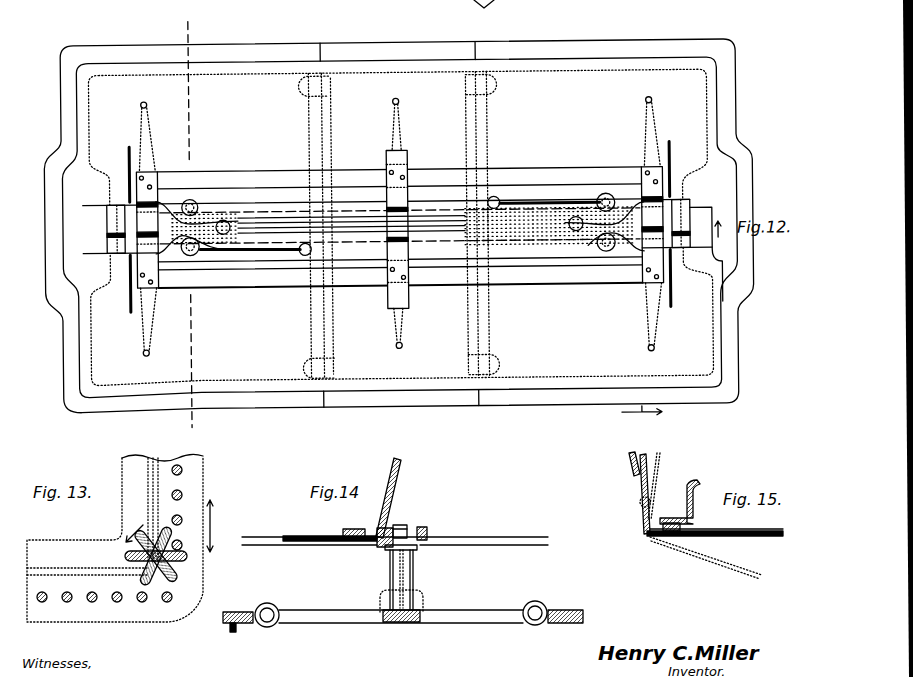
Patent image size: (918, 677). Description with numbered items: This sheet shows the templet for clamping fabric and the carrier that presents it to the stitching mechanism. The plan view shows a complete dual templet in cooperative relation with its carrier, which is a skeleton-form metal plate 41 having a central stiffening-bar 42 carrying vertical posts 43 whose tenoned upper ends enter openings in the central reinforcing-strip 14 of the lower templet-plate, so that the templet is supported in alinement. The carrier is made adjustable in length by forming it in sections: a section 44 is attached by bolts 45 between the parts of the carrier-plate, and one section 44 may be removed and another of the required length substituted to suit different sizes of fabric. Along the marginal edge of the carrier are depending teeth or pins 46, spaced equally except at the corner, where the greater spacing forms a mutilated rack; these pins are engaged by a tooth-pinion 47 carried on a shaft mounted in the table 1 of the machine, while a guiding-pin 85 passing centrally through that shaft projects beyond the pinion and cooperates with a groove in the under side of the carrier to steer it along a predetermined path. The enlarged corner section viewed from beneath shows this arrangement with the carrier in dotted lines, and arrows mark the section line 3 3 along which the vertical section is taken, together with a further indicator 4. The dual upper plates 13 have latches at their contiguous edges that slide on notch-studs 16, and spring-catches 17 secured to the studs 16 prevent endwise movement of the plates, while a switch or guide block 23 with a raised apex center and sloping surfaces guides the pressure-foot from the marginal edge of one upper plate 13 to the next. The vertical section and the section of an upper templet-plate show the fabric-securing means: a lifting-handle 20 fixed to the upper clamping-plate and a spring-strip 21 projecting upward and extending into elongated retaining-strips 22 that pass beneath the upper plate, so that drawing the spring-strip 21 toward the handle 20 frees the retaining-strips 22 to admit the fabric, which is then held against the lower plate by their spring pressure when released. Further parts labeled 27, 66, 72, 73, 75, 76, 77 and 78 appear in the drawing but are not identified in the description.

In FIG. 12, the table 1 is at (675, 325).
In FIG. 12, the section line 3 3 is at (188, 228).
In FIG. 13, the section line 3 3 is at (133, 532).
In FIG. 13, the section line 4- 4 is at (213, 526).
In FIG. 15, the upper plate 13 is at (725, 531).
In FIG. 14, the central reinforcing-strip 14 is at (425, 530).
In FIG. 15, the central reinforcing-strip 14 is at (703, 513).
In FIG. 12, the notch-studs 16 is at (196, 205).
In FIG. 12, the spring-catches 17 is at (265, 256).
In FIG. 15, the lifting-handle 20 is at (696, 484).
In FIG. 15, the spring-strip 21 is at (641, 488).
In FIG. 14, the retaining-strips 22 is at (298, 547).
In FIG. 15, the retaining-strips 22 is at (744, 538).
In FIG. 12, the switch or guide block 23 is at (112, 220).
In FIG. 14, the lever 27 is at (398, 477).
In FIG. 12, the carrier plate 41 is at (737, 396).
In FIG. 14, the carrier plate 41 is at (503, 610).
In FIG. 14, the central stiffening-bar 42 is at (407, 623).
In FIG. 12, the vertical posts 43 is at (226, 222).
In FIG. 12, the section 44 is at (333, 134).
In FIG. 12, the bolts 45 is at (330, 88).
In FIG. 13, the teeth or pins 46 is at (175, 640).
In FIG. 14, the tooth-pinion 47 is at (252, 547).
In FIG. 13, the hole 66 is at (155, 489).
In FIG. 14, the table plate 72 is at (514, 537).
In FIG. 12, the frame plate 73 is at (400, 227).
In FIG. 14, the frame plate 73 is at (298, 537).
In FIG. 12, the lever arm 75 is at (176, 203).
In FIG. 12, the pin 76 is at (305, 258).
In FIG. 12, the connecting rod 77 is at (545, 205).
In FIG. 12, the link pin 78 is at (498, 200).
In FIG. 13, the guiding-pin 85 is at (168, 562).